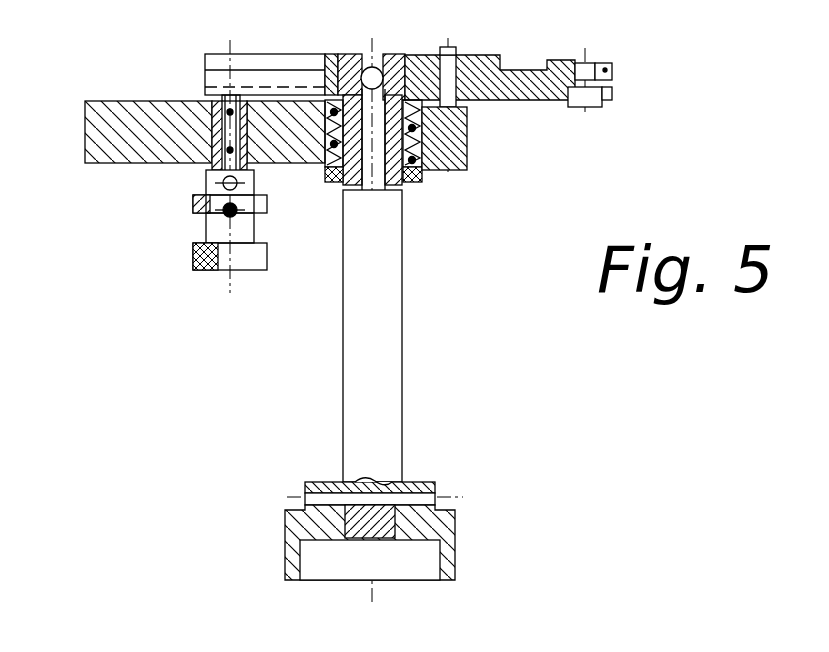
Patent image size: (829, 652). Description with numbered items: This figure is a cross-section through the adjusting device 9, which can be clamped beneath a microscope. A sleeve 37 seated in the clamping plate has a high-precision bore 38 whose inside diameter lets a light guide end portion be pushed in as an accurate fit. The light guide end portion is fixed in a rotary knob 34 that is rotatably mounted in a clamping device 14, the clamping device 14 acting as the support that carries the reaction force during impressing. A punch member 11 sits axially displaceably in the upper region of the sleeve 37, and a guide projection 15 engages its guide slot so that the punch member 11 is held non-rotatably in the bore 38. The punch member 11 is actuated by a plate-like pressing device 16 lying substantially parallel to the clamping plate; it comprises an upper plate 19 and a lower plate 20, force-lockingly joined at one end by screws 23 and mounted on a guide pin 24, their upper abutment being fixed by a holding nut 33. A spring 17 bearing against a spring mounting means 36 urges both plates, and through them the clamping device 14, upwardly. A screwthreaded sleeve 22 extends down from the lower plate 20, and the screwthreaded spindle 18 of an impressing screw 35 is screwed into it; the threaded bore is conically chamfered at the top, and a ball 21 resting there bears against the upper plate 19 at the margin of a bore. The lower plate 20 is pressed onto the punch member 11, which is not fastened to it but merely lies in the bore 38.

The adjusting device 9 is at (545, 385).
The punch member 11 is at (213, 102).
The clamping device 14 is at (193, 207).
The guide projection 15 is at (214, 120).
The pressing device 16 is at (322, 44).
The spring 17 is at (448, 172).
The screwthreaded spindle 18 is at (402, 210).
The upper plate 19 is at (612, 68).
The lower plate 20 is at (610, 88).
The ball 21 is at (372, 76).
The screwthreaded sleeve 22 is at (420, 185).
The screws 23 is at (588, 102).
The guide pin 24 is at (467, 102).
The holding nut 33 is at (457, 53).
The rotary knob 34 is at (212, 258).
The impressing screw 35 is at (433, 528).
The spring mounting means 36 is at (330, 181).
The sleeve 37 is at (213, 163).
The bore 38 is at (246, 140).